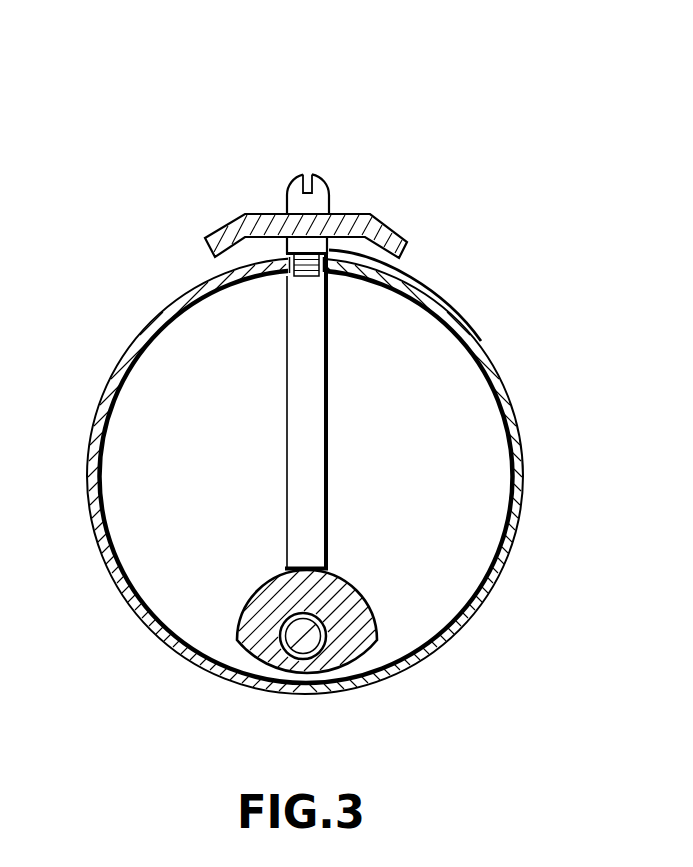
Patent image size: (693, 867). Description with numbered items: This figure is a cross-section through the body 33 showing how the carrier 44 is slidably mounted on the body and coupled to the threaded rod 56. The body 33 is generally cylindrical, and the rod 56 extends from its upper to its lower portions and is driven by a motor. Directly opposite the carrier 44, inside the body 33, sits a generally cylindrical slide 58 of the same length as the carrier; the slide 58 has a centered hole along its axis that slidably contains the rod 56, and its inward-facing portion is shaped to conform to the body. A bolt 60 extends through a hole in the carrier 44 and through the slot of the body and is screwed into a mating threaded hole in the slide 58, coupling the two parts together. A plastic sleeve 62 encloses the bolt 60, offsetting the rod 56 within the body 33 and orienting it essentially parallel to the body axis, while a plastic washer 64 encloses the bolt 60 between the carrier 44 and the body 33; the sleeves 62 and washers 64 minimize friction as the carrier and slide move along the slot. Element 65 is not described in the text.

The body 33 is at (530, 421).
The carrier 44 is at (238, 197).
The threaded rod 56 is at (294, 641).
The slide 58 is at (252, 570).
The bolts 60 is at (345, 172).
The plastic sleeves 62 is at (350, 412).
The plastic washers 64 is at (345, 250).
The nut 65 is at (355, 197).